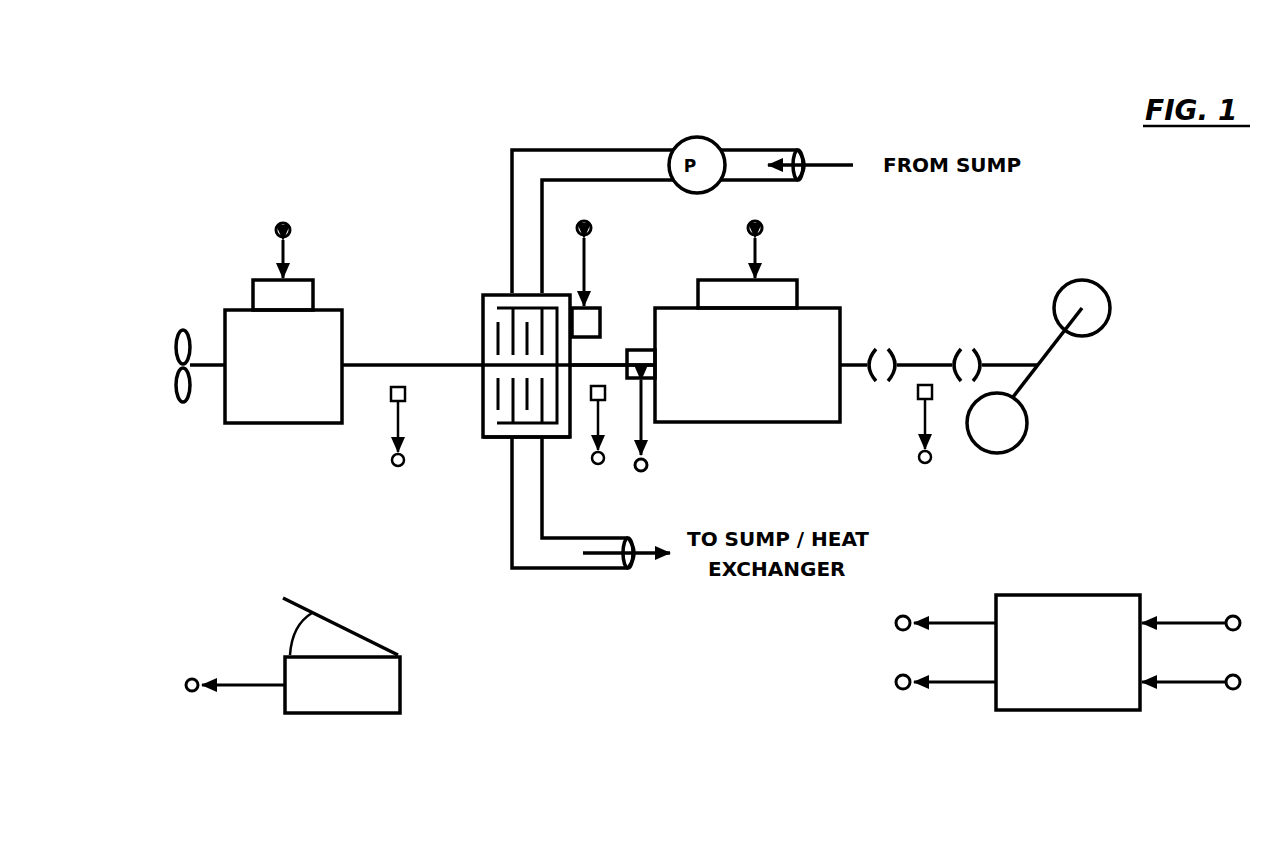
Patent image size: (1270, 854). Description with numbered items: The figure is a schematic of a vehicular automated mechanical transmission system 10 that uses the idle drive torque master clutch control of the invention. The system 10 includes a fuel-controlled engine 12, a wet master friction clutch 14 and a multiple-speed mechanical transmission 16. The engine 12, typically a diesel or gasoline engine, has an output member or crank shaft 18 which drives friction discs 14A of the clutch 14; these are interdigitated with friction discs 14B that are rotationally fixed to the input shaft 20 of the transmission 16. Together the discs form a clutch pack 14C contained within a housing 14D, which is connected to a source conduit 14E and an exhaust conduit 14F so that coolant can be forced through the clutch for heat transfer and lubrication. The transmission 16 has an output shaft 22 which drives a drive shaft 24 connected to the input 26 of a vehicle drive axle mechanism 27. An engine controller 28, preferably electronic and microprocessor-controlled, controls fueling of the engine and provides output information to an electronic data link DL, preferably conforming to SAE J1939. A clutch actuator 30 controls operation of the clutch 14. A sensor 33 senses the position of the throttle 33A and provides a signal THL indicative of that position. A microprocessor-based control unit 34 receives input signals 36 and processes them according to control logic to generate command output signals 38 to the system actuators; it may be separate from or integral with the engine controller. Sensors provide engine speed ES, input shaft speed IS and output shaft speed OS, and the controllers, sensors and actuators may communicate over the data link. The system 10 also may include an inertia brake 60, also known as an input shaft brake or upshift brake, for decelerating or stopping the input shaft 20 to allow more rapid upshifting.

The vehicular automated mechanical transmission system 10 is at (898, 80).
The fuel-controlled engine 12 is at (283, 395).
The wet master friction clutch 14 is at (469, 355).
The friction discs 14A is at (498, 352).
The friction discs 14B is at (498, 413).
The clutch pack 14C is at (498, 437).
The housing 14D is at (500, 293).
The source conduit 14E is at (527, 180).
The exhaust conduit 14F is at (533, 502).
The multiple-speed mechanical transmission 16 is at (768, 393).
The crank shaft 18 is at (382, 364).
The input shaft 20 is at (610, 362).
The output shaft 22 is at (783, 293).
The drive shaft 24 is at (910, 362).
The input 26 is at (1025, 362).
The vehicle drive axle mechanism 27 is at (1055, 392).
The engine controller 28 is at (268, 297).
The clutch actuator 30 is at (585, 325).
The sensor 33 is at (327, 670).
The throttle 33A is at (347, 628).
The microprocessor-based control unit 34 is at (1061, 686).
The input signals 36 is at (1198, 712).
The command output signals 38 is at (940, 712).
The inertia brake 60 is at (657, 357).
The electronic data link DL is at (297, 267).
The engine speed ES is at (390, 423).
The input shaft speed IS is at (614, 441).
The output shaft speed OS is at (908, 408).
The throttle position signal THL is at (227, 685).